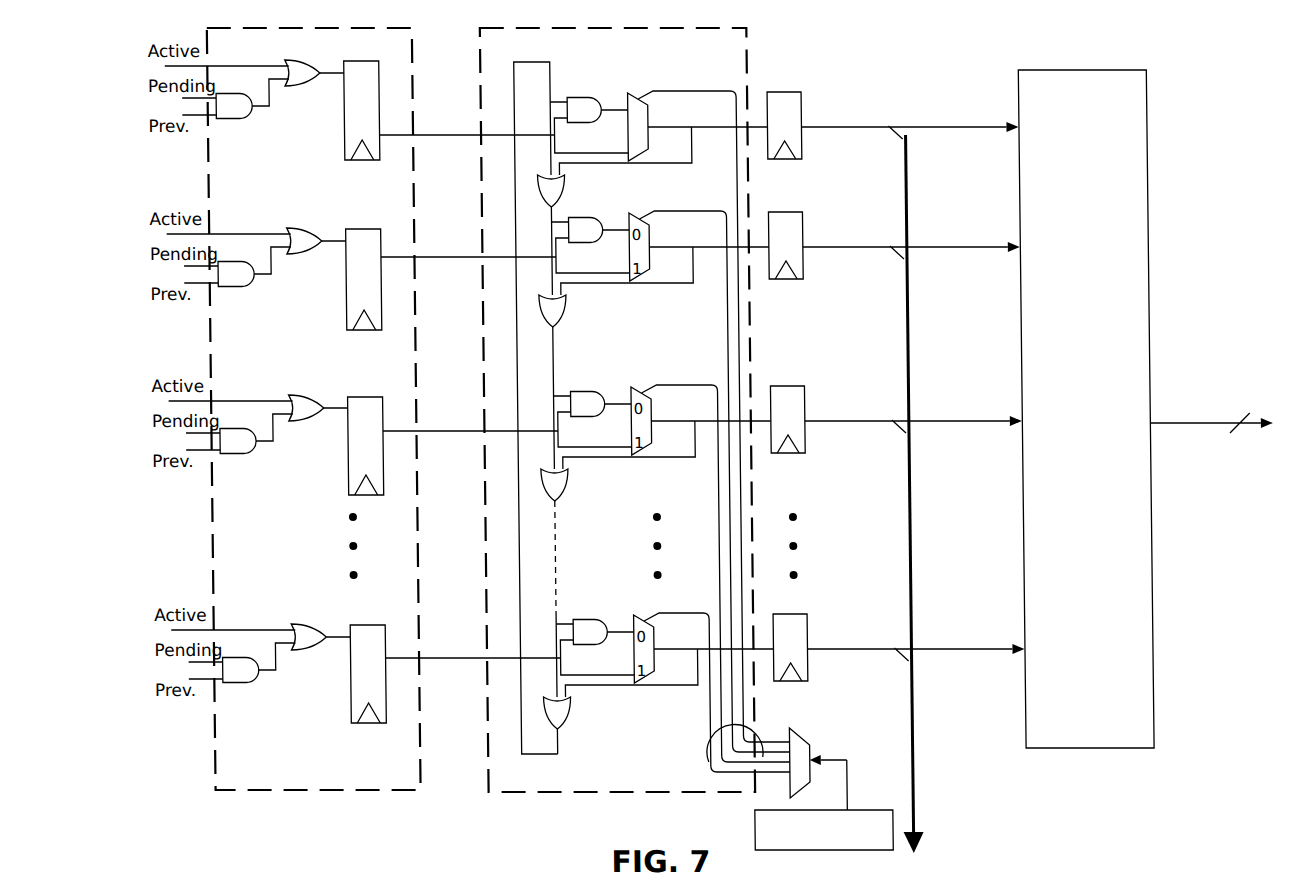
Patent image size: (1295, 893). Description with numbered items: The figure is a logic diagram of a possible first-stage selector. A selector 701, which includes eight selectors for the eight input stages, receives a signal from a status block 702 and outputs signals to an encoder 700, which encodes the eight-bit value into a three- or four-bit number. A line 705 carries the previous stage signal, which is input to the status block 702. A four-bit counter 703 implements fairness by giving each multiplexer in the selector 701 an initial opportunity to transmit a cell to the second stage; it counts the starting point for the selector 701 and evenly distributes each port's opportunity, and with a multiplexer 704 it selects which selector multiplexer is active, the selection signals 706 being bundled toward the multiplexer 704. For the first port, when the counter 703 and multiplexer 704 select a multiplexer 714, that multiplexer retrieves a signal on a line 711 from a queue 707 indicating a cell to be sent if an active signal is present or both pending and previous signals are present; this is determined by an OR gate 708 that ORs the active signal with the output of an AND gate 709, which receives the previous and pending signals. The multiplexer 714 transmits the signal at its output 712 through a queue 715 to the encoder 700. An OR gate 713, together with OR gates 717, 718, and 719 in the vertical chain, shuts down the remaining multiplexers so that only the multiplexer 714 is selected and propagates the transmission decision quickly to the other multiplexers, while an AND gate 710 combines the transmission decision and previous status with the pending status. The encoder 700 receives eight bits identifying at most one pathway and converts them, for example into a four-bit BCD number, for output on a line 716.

The encoder 700 is at (1146, 563).
The selector 701 is at (606, 797).
The status block 702 is at (307, 797).
The four-bit counter 703 is at (812, 850).
The multiplexer 704 is at (797, 735).
The line 705 is at (906, 770).
The selection signal lines 706 is at (699, 768).
The queue 707 is at (356, 60).
The OR gate 708 is at (292, 61).
The AND gate 709 is at (231, 119).
The AND gate 710 is at (587, 97).
The line 711 is at (566, 153).
The output 712 is at (711, 128).
The OR gate 713 is at (565, 190).
The multiplexer 714 is at (649, 116).
The queue 715 is at (802, 110).
The line 716 is at (1205, 428).
The OR gate 717 is at (564, 307).
The OR gate 718 is at (562, 480).
The OR gate 719 is at (567, 708).